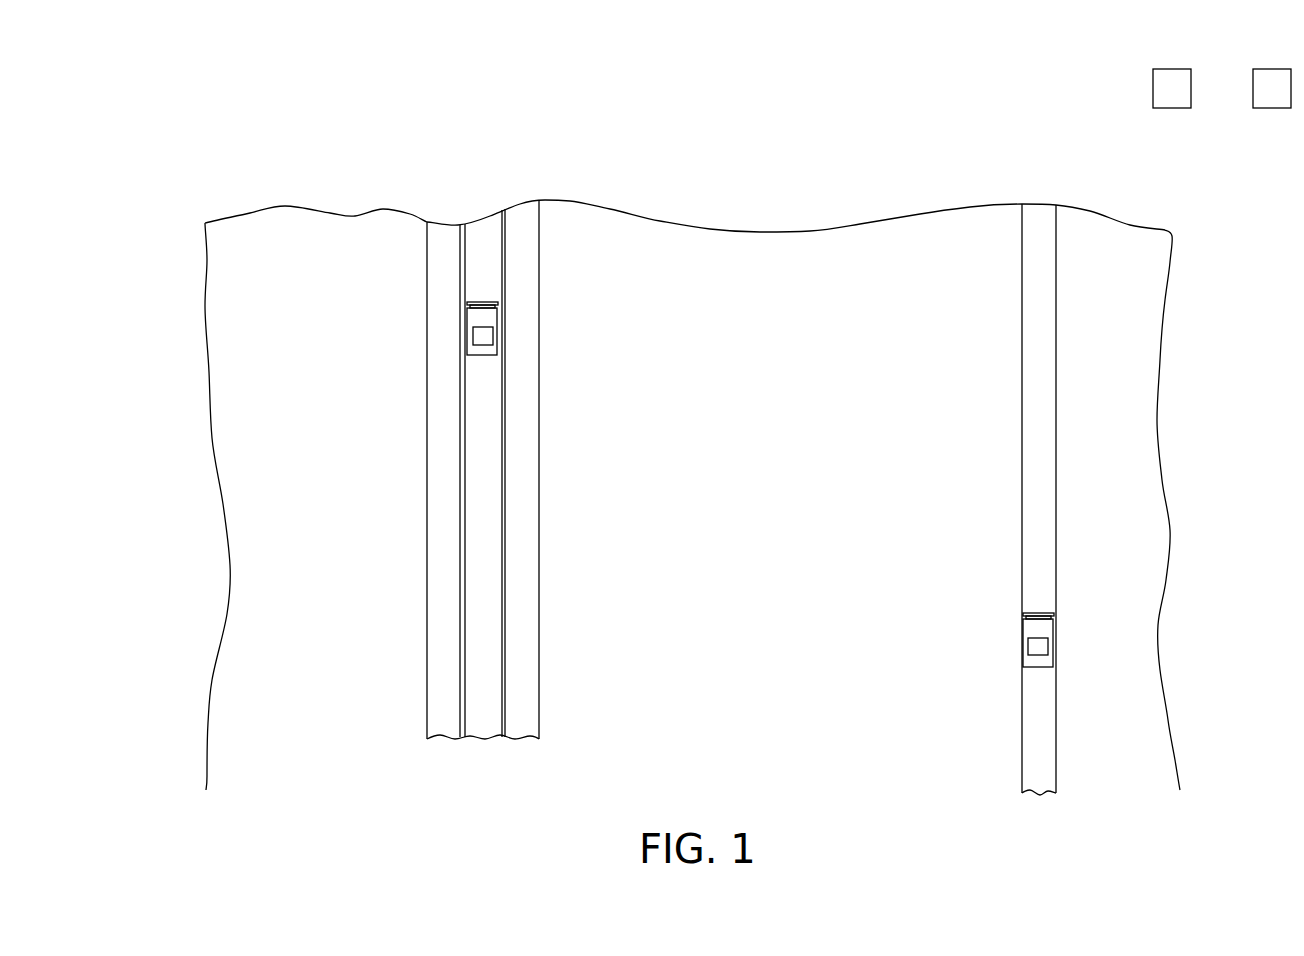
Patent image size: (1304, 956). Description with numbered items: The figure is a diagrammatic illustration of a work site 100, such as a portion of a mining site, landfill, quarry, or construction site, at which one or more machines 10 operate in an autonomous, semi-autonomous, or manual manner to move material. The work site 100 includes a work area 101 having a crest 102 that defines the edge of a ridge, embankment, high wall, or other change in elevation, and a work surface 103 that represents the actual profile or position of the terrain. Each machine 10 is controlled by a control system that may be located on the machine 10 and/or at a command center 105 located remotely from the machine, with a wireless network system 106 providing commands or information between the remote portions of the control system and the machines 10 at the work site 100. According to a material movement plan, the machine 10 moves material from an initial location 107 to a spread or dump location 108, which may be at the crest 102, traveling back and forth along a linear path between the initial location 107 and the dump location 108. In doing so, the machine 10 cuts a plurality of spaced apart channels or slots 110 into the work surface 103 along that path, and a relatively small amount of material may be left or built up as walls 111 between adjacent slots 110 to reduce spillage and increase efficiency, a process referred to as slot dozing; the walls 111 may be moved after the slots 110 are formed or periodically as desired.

The machine 10 is at (472, 350).
The work site 100 is at (184, 168).
The work area 101 is at (234, 374).
The crest 102 is at (370, 210).
The work surface 103 is at (297, 263).
The command center 105 is at (1165, 88).
The wireless network system 106 is at (1272, 88).
The initial location 107 is at (396, 698).
The dump location 108 is at (545, 164).
The slots 110 is at (442, 502).
The walls 111 is at (462, 582).